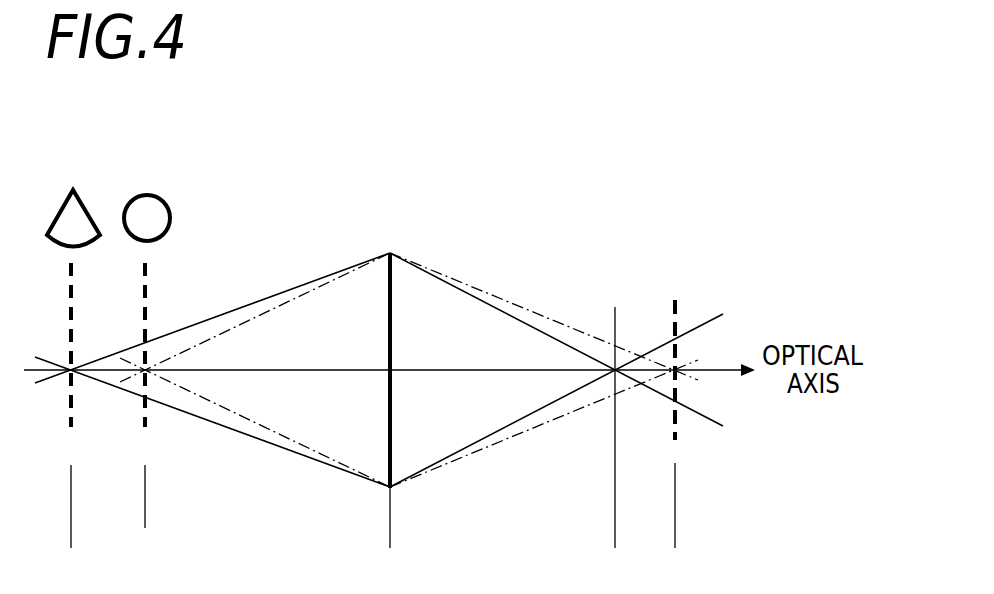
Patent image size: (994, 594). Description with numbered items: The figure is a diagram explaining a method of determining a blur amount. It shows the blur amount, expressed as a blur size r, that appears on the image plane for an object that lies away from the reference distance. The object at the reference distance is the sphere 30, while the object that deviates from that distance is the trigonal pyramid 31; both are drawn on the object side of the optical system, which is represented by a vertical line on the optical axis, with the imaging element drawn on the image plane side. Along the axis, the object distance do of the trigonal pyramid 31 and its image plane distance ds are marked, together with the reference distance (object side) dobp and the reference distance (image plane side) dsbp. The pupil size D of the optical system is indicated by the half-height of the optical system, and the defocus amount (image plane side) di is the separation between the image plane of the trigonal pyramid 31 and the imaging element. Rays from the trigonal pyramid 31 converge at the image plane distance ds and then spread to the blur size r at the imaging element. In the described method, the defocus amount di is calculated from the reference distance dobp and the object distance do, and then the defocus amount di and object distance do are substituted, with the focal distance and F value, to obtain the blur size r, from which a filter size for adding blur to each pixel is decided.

The sphere 30 is at (156, 195).
The trigonal pyramid 31 is at (75, 191).
The pupil size D is at (377, 253).
The blur size r is at (685, 340).
The reference distance (object side) dobp is at (390, 514).
The reference distance (image plane side) dsbp is at (675, 514).
The object distance do is at (390, 563).
The image plane distance ds is at (615, 563).
The defocus amount (image plane side) di is at (675, 563).